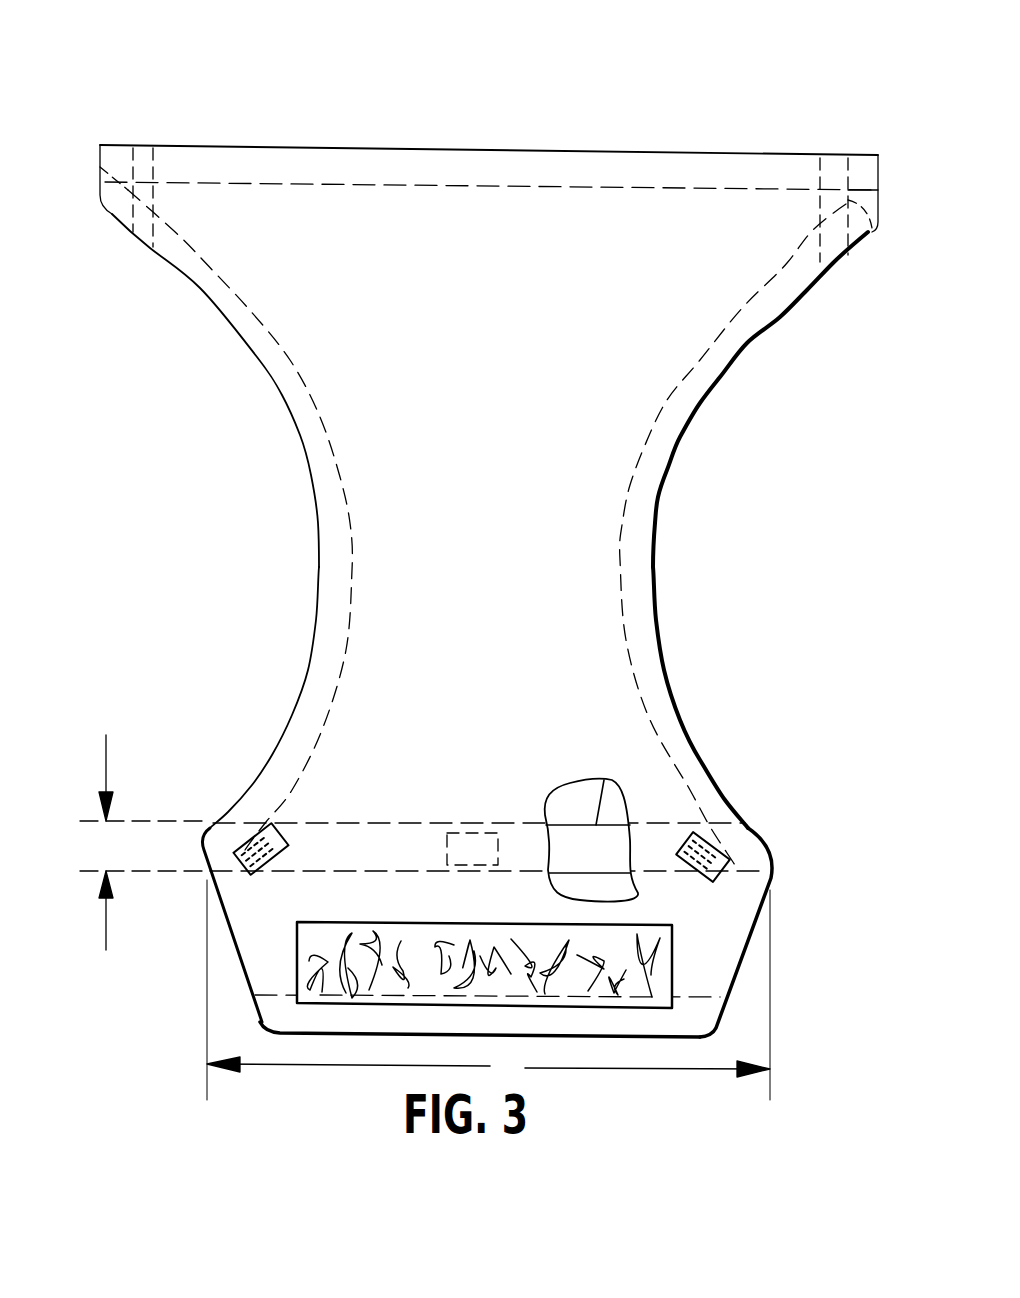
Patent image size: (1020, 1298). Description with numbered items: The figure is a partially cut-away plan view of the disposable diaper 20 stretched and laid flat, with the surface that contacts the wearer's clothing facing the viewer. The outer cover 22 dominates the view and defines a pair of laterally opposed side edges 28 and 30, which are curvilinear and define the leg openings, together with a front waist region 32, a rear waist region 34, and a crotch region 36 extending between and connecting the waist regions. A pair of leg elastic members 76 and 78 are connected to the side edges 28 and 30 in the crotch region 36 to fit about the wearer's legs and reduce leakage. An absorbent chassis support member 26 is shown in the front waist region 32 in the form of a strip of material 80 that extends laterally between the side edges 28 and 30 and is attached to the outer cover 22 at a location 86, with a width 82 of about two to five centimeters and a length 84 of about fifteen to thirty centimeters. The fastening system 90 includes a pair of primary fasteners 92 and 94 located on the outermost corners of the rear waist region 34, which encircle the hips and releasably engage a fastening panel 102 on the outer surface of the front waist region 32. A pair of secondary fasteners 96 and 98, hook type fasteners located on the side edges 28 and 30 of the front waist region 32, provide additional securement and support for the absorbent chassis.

The disposable diaper 20 is at (147, 70).
The outer cover 22 is at (220, 197).
The absorbent chassis support member 26 is at (604, 779).
The side edge 28 is at (716, 781).
The side edge 30 is at (259, 776).
The front waist region 32 is at (803, 925).
The rear waist region 34 is at (818, 291).
The crotch region 36 is at (740, 548).
The leg elastic member 76 is at (684, 726).
The leg elastic member 78 is at (293, 719).
The strip of material 80 is at (575, 840).
The width 82 is at (142, 829).
The length 84 is at (488, 990).
The location 86 is at (455, 830).
The fastening system 90 is at (861, 134).
The primary fastener 92 is at (871, 226).
The primary fastener 94 is at (110, 172).
The secondary fastener 96 is at (726, 856).
The secondary fastener 98 is at (291, 838).
The fastening panel 102 is at (295, 951).